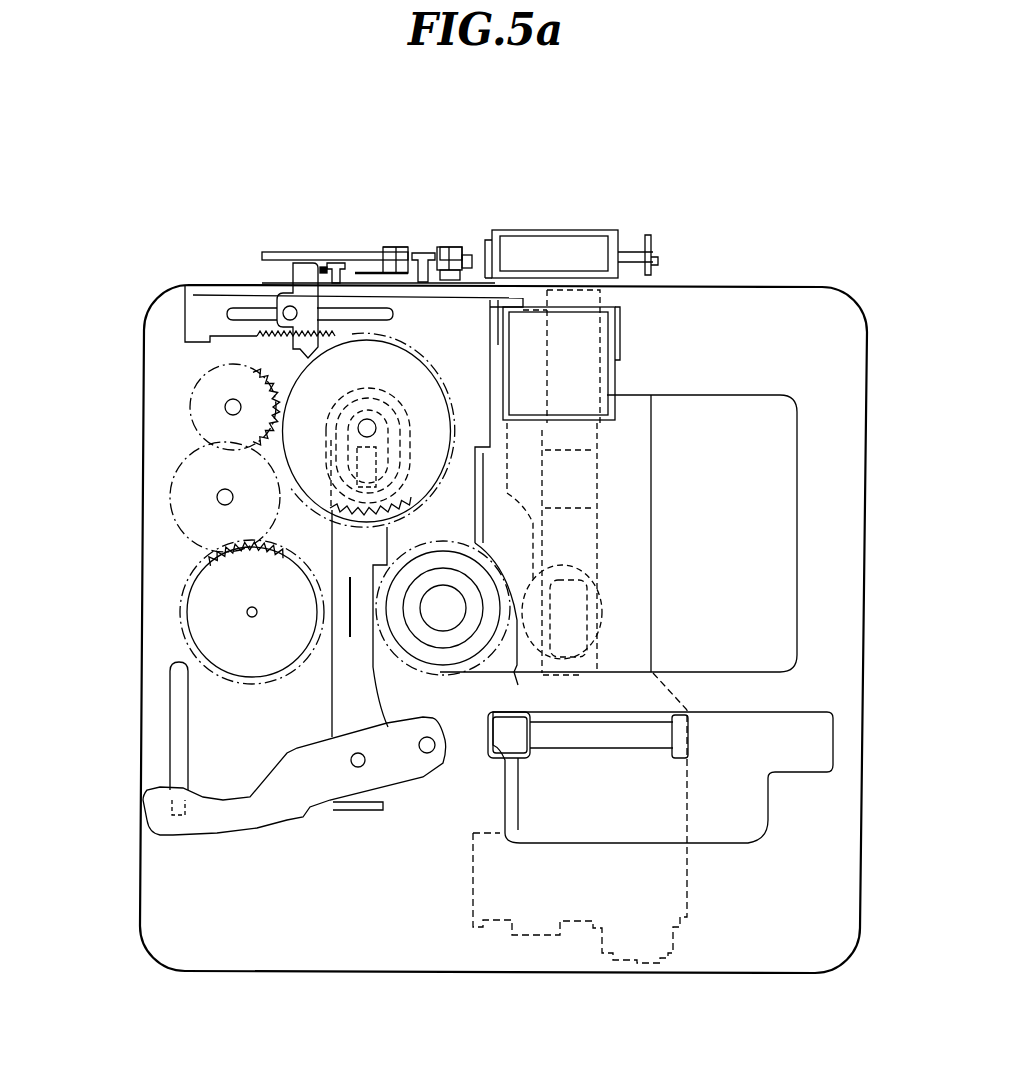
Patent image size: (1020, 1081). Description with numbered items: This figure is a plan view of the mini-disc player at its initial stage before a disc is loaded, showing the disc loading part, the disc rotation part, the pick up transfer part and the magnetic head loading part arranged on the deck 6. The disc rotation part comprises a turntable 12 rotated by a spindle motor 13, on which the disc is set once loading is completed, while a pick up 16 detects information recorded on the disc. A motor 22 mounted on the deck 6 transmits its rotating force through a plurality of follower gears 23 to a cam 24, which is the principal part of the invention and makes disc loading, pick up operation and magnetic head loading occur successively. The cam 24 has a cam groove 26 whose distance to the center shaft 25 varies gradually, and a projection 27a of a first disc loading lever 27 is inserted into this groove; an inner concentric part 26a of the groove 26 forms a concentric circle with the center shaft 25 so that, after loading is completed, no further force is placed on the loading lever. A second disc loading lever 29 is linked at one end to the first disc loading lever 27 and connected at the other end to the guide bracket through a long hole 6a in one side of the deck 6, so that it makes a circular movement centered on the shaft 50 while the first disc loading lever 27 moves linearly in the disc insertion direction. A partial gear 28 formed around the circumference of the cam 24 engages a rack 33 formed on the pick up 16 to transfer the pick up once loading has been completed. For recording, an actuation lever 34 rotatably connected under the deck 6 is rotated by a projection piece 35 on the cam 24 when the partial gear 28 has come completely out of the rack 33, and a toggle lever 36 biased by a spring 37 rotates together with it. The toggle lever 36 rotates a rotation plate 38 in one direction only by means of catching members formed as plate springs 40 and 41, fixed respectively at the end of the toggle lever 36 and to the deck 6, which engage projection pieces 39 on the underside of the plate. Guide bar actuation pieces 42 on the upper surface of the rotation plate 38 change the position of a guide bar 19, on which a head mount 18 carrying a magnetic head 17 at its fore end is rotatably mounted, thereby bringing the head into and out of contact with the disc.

The deck 6 is at (405, 972).
The long hole 6a is at (172, 773).
The turntable 12 is at (467, 630).
The spindle motor 13 is at (442, 677).
The pick up 16 is at (690, 878).
The magnetic head 17 is at (580, 617).
The head mount 18 is at (620, 332).
The guide bar 19 is at (275, 252).
The motor 22 is at (300, 590).
The follower gears 23 is at (190, 410).
The cam 24 is at (300, 387).
The center shaft 25 is at (359, 430).
The cam groove 26 is at (376, 430).
The concentric part 26a is at (362, 385).
The first disc loading lever 27 is at (340, 682).
The projection 27a is at (350, 492).
The partial gear 28 is at (317, 557).
The second disc loading lever 29 is at (213, 832).
The rack 33 is at (197, 303).
The actuation lever 34 is at (306, 262).
The projection piece 35 is at (430, 357).
The toggle lever 36 is at (277, 282).
The spring 37 is at (334, 265).
The rotation plate 38 is at (455, 246).
The projection pieces 39 is at (403, 247).
The plate spring 40 is at (380, 252).
The plate spring 41 is at (466, 275).
The guide bar actuation pieces 42 is at (414, 250).
The shaft 50 is at (427, 753).